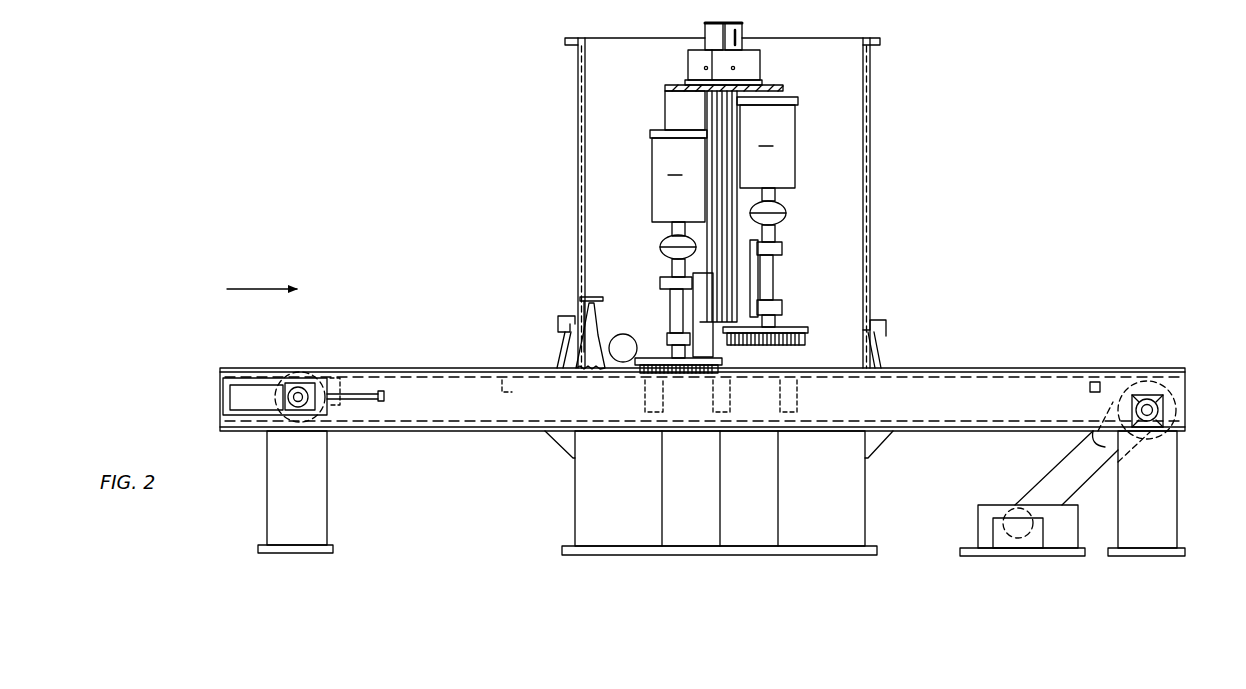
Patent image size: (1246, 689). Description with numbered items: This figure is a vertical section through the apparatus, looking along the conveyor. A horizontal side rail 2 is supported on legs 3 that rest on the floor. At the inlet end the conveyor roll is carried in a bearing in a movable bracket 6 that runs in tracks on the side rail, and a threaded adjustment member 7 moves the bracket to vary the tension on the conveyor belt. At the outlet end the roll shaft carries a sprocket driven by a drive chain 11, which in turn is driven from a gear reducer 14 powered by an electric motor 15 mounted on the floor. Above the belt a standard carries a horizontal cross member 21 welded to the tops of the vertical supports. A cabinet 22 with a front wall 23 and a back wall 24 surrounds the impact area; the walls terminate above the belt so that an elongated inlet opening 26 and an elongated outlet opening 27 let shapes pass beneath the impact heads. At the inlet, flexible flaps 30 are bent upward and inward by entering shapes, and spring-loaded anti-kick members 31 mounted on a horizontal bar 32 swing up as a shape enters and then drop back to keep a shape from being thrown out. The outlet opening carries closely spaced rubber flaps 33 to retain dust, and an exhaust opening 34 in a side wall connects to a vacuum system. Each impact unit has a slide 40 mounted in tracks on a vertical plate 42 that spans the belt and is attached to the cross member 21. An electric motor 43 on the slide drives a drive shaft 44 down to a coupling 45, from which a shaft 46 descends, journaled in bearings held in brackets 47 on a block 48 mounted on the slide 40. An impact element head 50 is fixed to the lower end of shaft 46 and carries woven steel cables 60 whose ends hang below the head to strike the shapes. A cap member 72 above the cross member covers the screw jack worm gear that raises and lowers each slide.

The side rail 2 is at (382, 376).
The legs 3 is at (327, 460).
The movable bracket 6 is at (316, 394).
The threaded adjustment member 7 is at (343, 392).
The drive chain 11 is at (1042, 475).
The gear reducer 14 is at (978, 513).
The electric motor 15 is at (993, 531).
The cross member 21 is at (783, 88).
The cabinet 22 is at (576, 97).
The front wall 23 is at (578, 149).
The back wall 24 is at (870, 98).
The inlet opening 26 is at (563, 348).
The outlet opening 27 is at (873, 371).
The flaps 30 is at (560, 327).
The anti-kick members 31 is at (592, 333).
The horizontal bar 32 is at (589, 300).
The flexible flaps 33 is at (880, 350).
The exhaust opening 34 is at (625, 334).
The slide 40 is at (713, 342).
The vertical plate 42 is at (728, 86).
The electric motor 43 is at (650, 143).
The drive shaft 44 is at (672, 229).
The coupling 45 is at (660, 247).
The shaft 46 is at (672, 269).
The brackets 47 is at (660, 283).
The block 48 is at (748, 285).
The impact element head 50 is at (805, 330).
The steel cable 60 is at (790, 345).
The cap member 72 is at (705, 33).